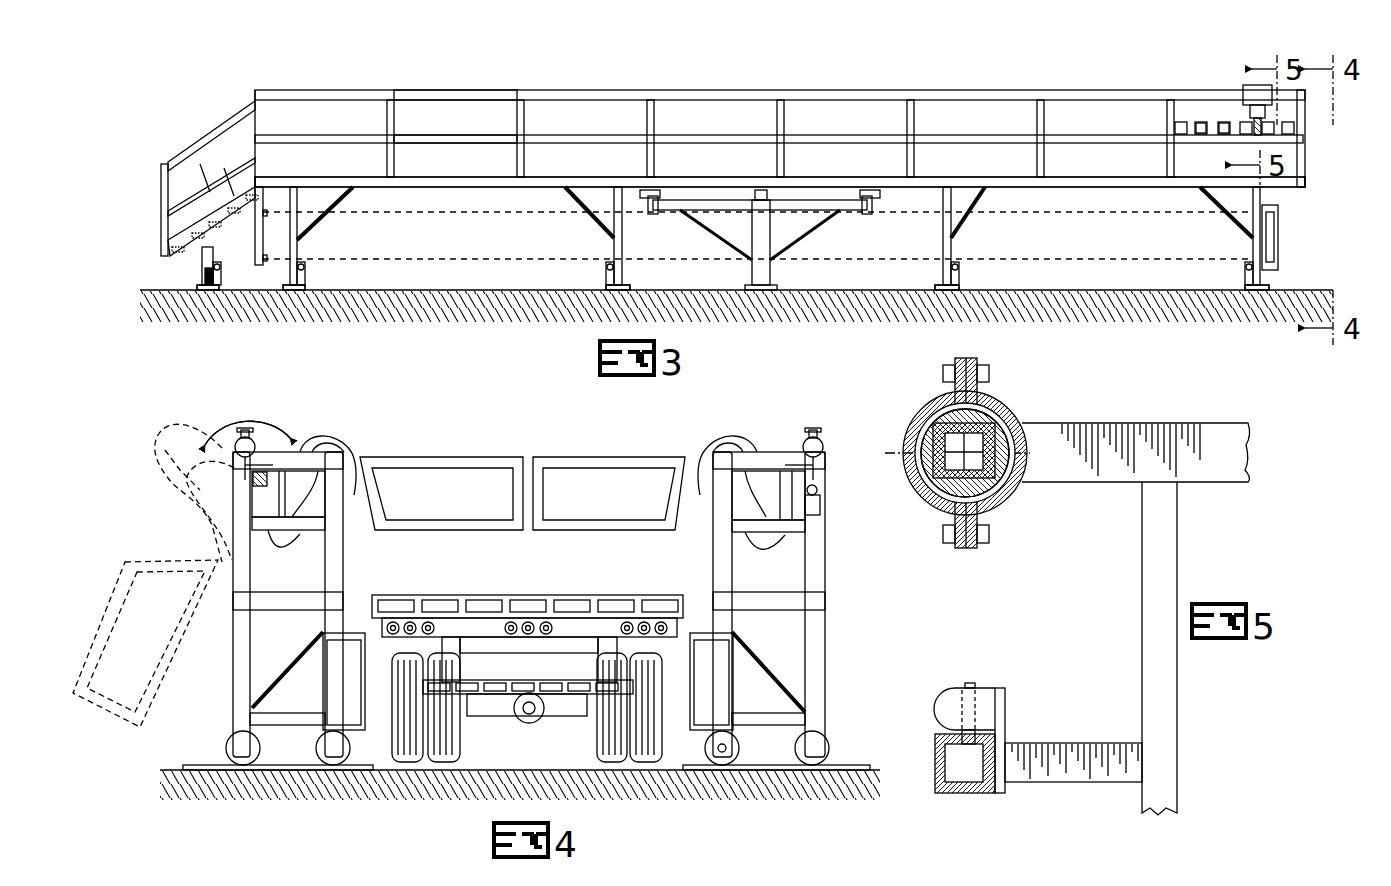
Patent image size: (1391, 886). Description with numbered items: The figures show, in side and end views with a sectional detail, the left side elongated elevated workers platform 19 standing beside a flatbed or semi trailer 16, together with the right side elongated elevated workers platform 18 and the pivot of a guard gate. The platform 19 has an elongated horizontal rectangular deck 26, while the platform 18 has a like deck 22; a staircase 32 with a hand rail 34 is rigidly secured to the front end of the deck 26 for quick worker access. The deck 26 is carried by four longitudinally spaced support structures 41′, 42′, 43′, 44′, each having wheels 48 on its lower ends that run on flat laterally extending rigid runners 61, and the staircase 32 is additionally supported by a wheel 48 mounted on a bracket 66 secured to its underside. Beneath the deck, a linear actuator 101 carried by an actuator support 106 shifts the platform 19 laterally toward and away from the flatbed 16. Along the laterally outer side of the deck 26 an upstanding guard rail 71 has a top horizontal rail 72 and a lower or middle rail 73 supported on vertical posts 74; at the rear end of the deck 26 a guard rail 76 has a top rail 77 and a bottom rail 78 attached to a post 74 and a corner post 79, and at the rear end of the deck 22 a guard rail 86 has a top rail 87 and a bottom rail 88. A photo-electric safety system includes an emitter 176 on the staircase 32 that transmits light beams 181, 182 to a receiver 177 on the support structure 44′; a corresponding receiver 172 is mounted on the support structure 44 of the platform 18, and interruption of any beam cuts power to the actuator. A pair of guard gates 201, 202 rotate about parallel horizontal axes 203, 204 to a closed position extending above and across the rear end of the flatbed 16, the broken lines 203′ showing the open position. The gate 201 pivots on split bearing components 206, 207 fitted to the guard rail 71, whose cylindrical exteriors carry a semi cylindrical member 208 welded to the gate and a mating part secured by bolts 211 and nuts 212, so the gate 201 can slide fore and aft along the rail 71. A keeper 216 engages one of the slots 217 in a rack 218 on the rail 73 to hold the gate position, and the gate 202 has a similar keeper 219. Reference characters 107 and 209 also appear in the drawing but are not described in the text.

In FIG. 4, the flatbed or semi trailer 16 is at (541, 595).
In FIG. 4, the right side elongated elevated workers platform 18 is at (820, 548).
In FIG. 3, the left side elongated elevated workers platform 19 is at (697, 90).
In FIG. 4, the left side elongated elevated workers platform 19 is at (234, 685).
In FIG. 4, the deck 22 is at (800, 594).
In FIG. 3, the deck 26 is at (456, 178).
In FIG. 4, the deck 26 is at (322, 594).
In FIG. 3, the staircase 32 is at (162, 212).
In FIG. 3, the hand rail 34 is at (202, 128).
In FIG. 3, the support structure 41′ is at (300, 225).
In FIG. 3, the support structure 42′ is at (622, 225).
In FIG. 3, the support structure 43′ is at (951, 225).
In FIG. 3, the support structure 44′ is at (1252, 236).
In FIG. 4, the support structure 44 is at (826, 668).
In FIG. 3, the wheels 48 is at (306, 277).
In FIG. 4, the wheels 48 is at (231, 745).
In FIG. 3, the rigid runners 61 is at (210, 291).
In FIG. 4, the rigid runners 61 is at (217, 768).
In FIG. 3, the bracket 66 is at (200, 262).
In FIG. 3, the guard rail 71 is at (345, 90).
In FIG. 5, the guard rail 71 is at (995, 412).
In FIG. 3, the top horizontal rail 72 is at (428, 90).
In FIG. 3, the lower or middle rail 73 is at (430, 137).
In FIG. 5, the lower or middle rail 73 is at (975, 794).
In FIG. 3, the vertical uprights or posts 74 is at (385, 124).
In FIG. 4, the vertical uprights or posts 74 is at (234, 592).
In FIG. 4, the guard rail 76 is at (350, 470).
In FIG. 4, the top rail 77 is at (300, 452).
In FIG. 4, the bottom rail 78 is at (302, 536).
In FIG. 4, the corner post 79 is at (340, 548).
In FIG. 4, the guard rail 86 is at (786, 452).
In FIG. 4, the top rail 87 is at (738, 462).
In FIG. 4, the bottom rail 88 is at (750, 545).
In FIG. 3, the linear actuator 101 is at (790, 212).
In FIG. 3, the actuator support 106 is at (770, 272).
In FIG. 3, the bracket 107 is at (726, 180).
In FIG. 4, the receiver 172 is at (700, 668).
In FIG. 3, the sender or emitter 176 is at (293, 230).
In FIG. 3, the receiver 177 is at (1278, 232).
In FIG. 4, the receiver 177 is at (356, 665).
In FIG. 3, the light beam 181 is at (1132, 214).
In FIG. 3, the light beam 182 is at (1012, 262).
In FIG. 3, the guard gate 201 is at (1252, 85).
In FIG. 4, the guard gate 201 is at (456, 457).
In FIG. 5, the guard gate 201 is at (1180, 423).
In FIG. 4, the guard gate 202 is at (598, 457).
In FIG. 4, the horizontal axis 203 is at (245, 462).
In FIG. 5, the horizontal axis 203 is at (1003, 494).
In FIG. 4, the open position 203′ is at (145, 562).
In FIG. 4, the horizontal axis 204 is at (823, 456).
In FIG. 5, the split bearing component 206 is at (999, 453).
In FIG. 5, the split bearing component 207 is at (937, 412).
In FIG. 5, the semi cylindrical member 208 is at (1020, 478).
In FIG. 5, the bearing 209 is at (910, 485).
In FIG. 5, the bolts 211 is at (943, 372).
In FIG. 5, the nuts 212 is at (989, 372).
In FIG. 5, the keeper 216 is at (985, 695).
In FIG. 3, the slots 217 is at (1213, 122).
In FIG. 5, the slots 217 is at (976, 740).
In FIG. 3, the rack 218 is at (1226, 135).
In FIG. 5, the rack 218 is at (969, 684).
In FIG. 4, the keeper 219 is at (822, 508).